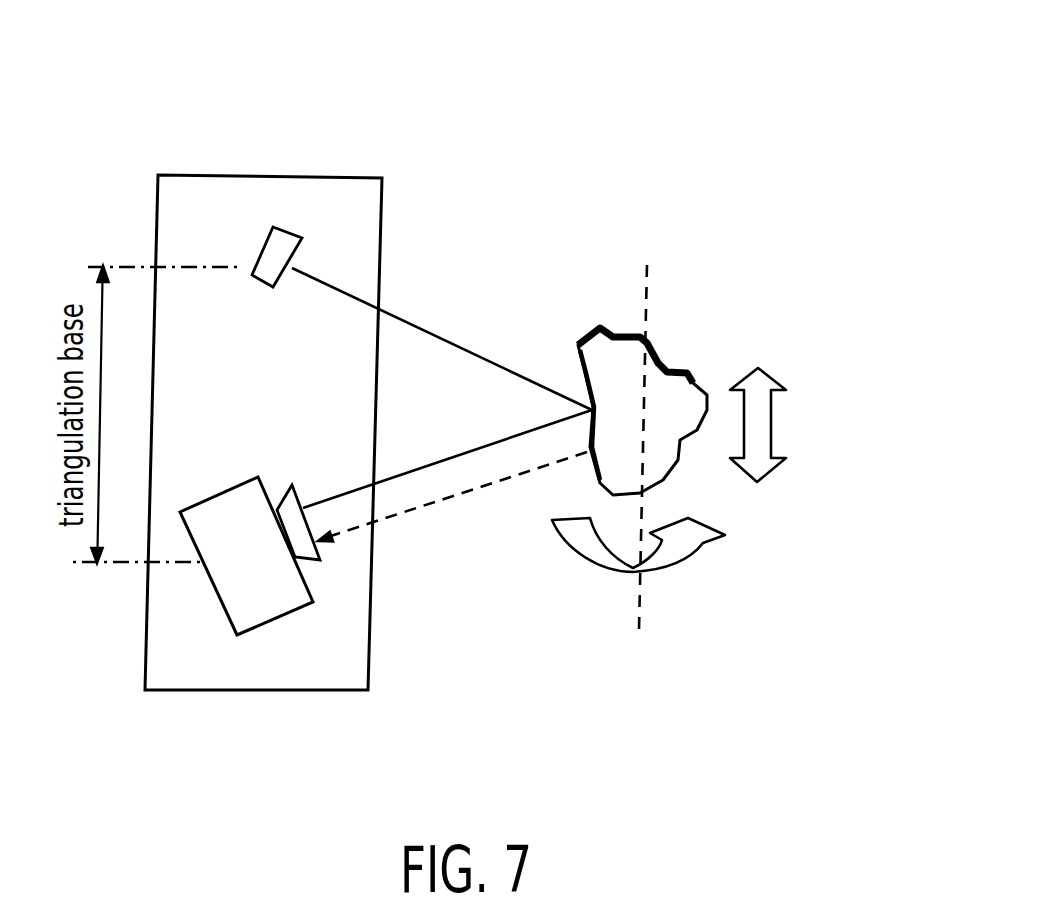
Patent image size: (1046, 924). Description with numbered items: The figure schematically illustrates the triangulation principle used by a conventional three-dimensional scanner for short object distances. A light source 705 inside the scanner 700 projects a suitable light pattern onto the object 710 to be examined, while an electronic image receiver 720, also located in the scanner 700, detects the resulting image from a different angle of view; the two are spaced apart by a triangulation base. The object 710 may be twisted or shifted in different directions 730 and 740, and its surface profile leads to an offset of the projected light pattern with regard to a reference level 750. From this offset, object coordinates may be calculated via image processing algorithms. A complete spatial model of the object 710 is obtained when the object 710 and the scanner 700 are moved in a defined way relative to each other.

The scanner 700 is at (327, 177).
The light source 705 is at (277, 240).
The object 710 is at (693, 378).
The electronic image receiver 720 is at (257, 600).
The direction 730 is at (760, 436).
The direction 740 is at (650, 573).
The reference level 750 is at (648, 289).